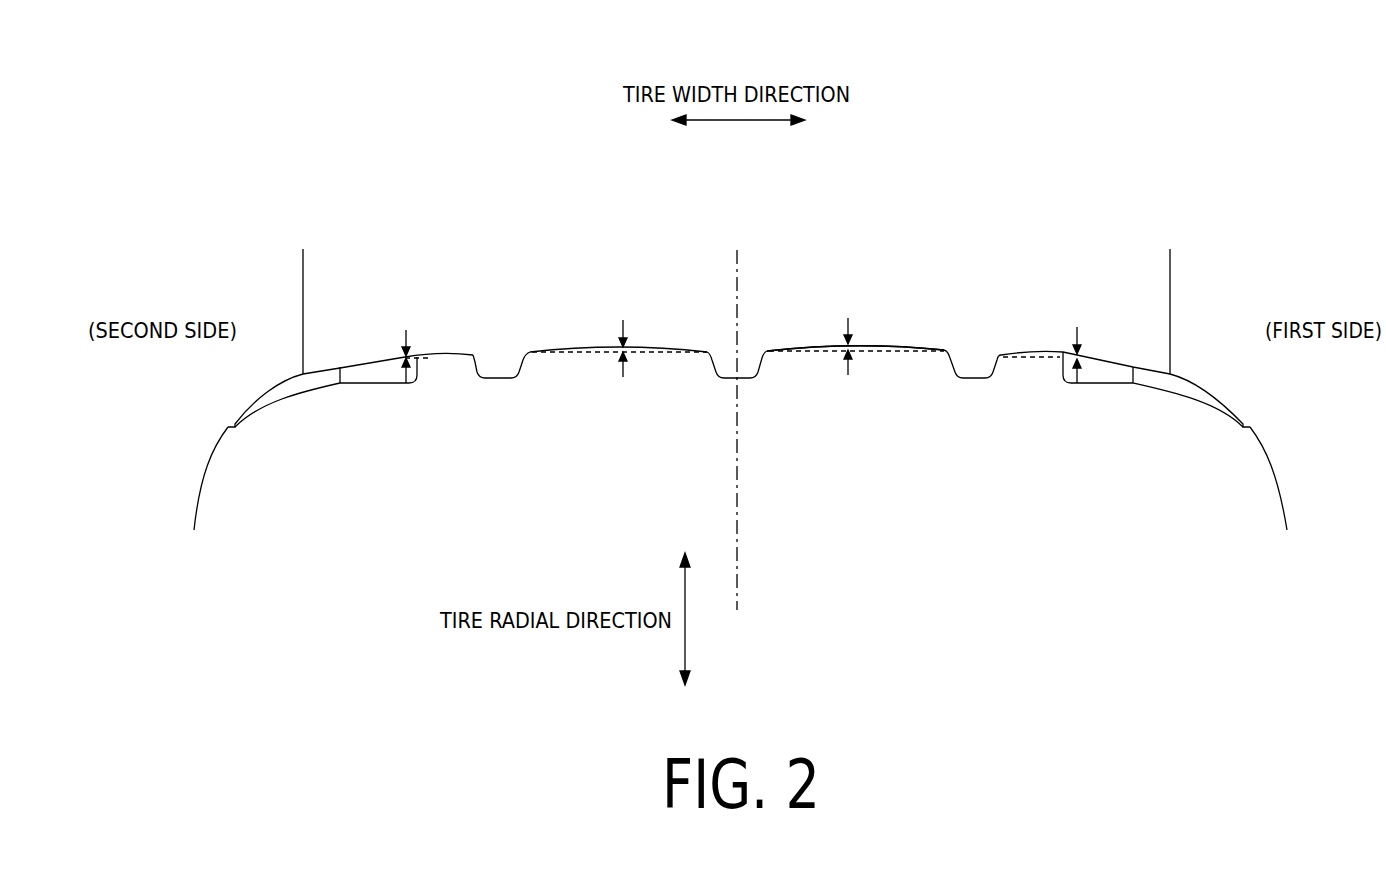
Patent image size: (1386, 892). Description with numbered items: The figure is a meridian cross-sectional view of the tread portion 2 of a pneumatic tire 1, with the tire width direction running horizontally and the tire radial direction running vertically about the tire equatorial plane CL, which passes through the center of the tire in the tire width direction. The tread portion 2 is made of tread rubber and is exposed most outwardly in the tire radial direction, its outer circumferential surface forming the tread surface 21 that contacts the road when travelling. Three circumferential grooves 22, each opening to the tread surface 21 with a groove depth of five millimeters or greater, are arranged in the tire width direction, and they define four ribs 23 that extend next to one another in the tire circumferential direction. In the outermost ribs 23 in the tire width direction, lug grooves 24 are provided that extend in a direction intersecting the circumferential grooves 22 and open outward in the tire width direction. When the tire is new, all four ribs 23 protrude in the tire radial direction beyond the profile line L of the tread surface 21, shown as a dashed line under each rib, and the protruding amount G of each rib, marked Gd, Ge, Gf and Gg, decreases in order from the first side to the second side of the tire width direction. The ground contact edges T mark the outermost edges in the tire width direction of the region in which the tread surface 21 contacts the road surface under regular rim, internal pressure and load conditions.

The pneumatic tire 1 is at (1003, 202).
The tread portion 2 is at (802, 373).
The tread surface 21 is at (912, 338).
The circumferential groove 22 is at (483, 366).
The rib 23 is at (391, 355).
The lug groove 24 is at (342, 367).
The ground contact edge T is at (736, 297).
The tire equatorial plane CL is at (738, 416).
The profile line L is at (428, 358).
The protruding amount G is at (398, 361).